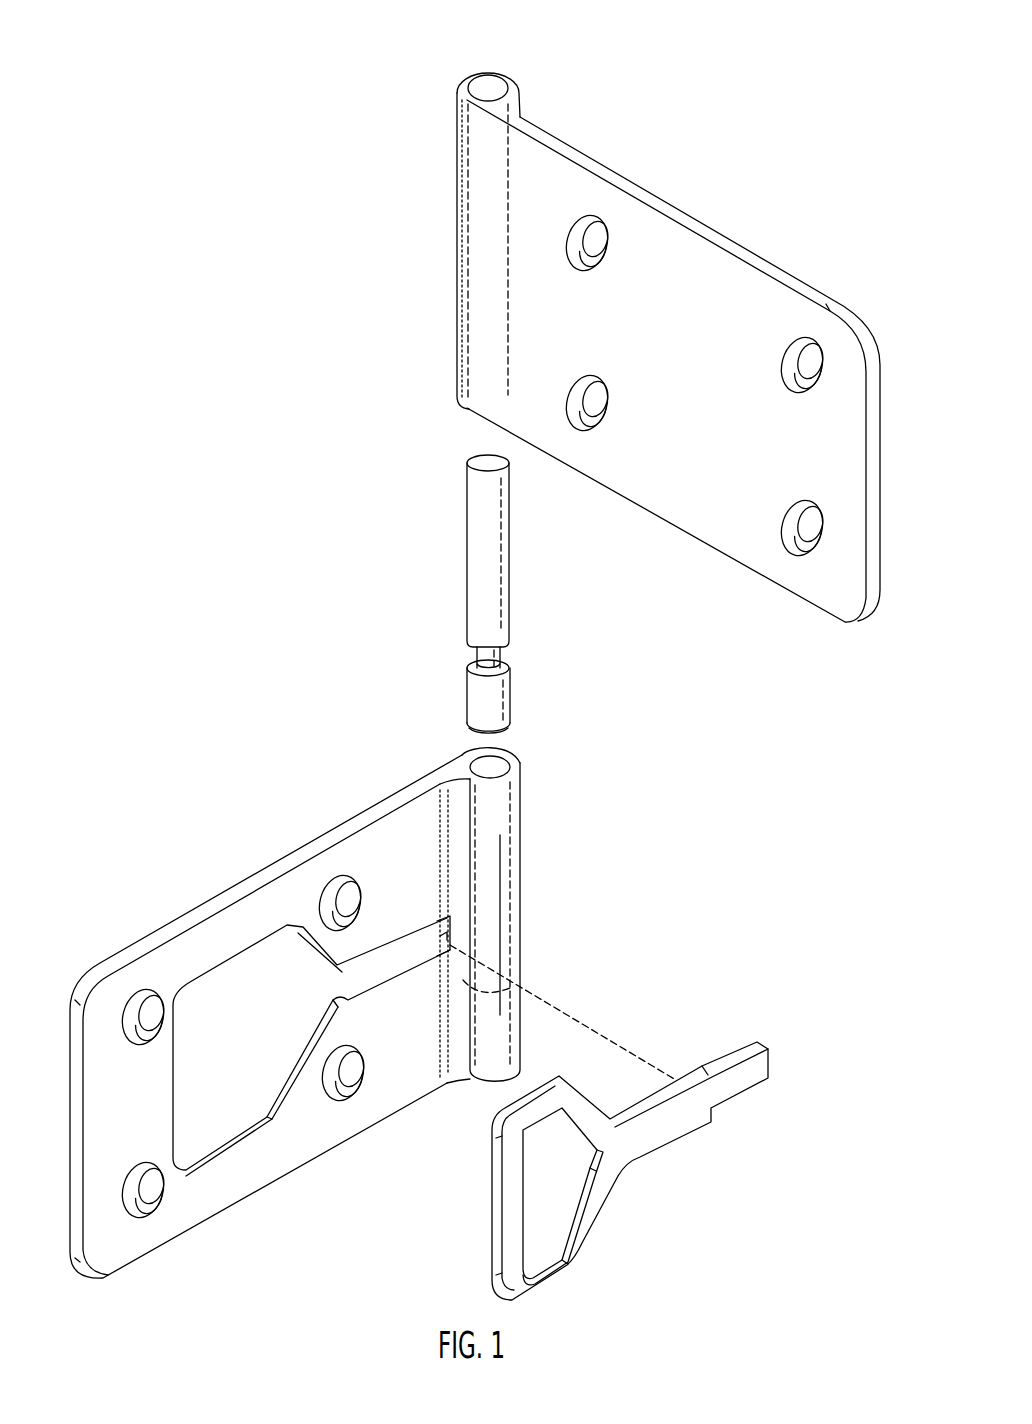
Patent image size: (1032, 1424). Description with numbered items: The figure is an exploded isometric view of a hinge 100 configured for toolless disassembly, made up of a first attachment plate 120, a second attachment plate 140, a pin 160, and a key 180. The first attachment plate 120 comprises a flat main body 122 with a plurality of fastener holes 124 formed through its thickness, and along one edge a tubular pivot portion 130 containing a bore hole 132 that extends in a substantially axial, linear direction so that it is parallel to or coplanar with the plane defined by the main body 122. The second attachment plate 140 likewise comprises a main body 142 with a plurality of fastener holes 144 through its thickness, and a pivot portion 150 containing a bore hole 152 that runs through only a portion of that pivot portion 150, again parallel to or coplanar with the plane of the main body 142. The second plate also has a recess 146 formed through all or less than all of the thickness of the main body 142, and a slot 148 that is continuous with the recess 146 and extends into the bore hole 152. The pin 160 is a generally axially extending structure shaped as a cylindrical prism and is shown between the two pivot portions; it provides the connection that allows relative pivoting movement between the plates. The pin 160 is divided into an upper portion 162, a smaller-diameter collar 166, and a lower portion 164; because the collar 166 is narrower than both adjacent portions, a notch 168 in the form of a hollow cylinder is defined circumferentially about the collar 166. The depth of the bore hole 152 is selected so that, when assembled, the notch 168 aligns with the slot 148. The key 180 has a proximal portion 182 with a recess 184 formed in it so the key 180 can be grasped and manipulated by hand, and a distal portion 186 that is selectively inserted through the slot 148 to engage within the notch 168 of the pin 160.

The hinge 100 is at (748, 62).
The first attachment plate 120 is at (644, 349).
The main body 122 is at (712, 412).
The fastener holes 124 is at (597, 268).
The pivot portion 130 is at (514, 80).
The bore hole 132 is at (485, 348).
The second attachment plate 140 is at (371, 1013).
The main body 142 is at (421, 872).
The fastener holes 144 is at (147, 990).
The recess 146 is at (268, 1112).
The slot 148 is at (436, 926).
The pivot portion 150 is at (492, 1038).
The bore hole 152 is at (488, 880).
The pin 160 is at (487, 612).
The upper portion 162 is at (490, 545).
The lower portion 164 is at (495, 710).
The collar 166 is at (495, 653).
The notch 168 is at (465, 652).
The key 180 is at (627, 1171).
The proximal portion 182 is at (512, 1212).
The recess 184 is at (572, 1218).
The distal portion 186 is at (745, 1077).